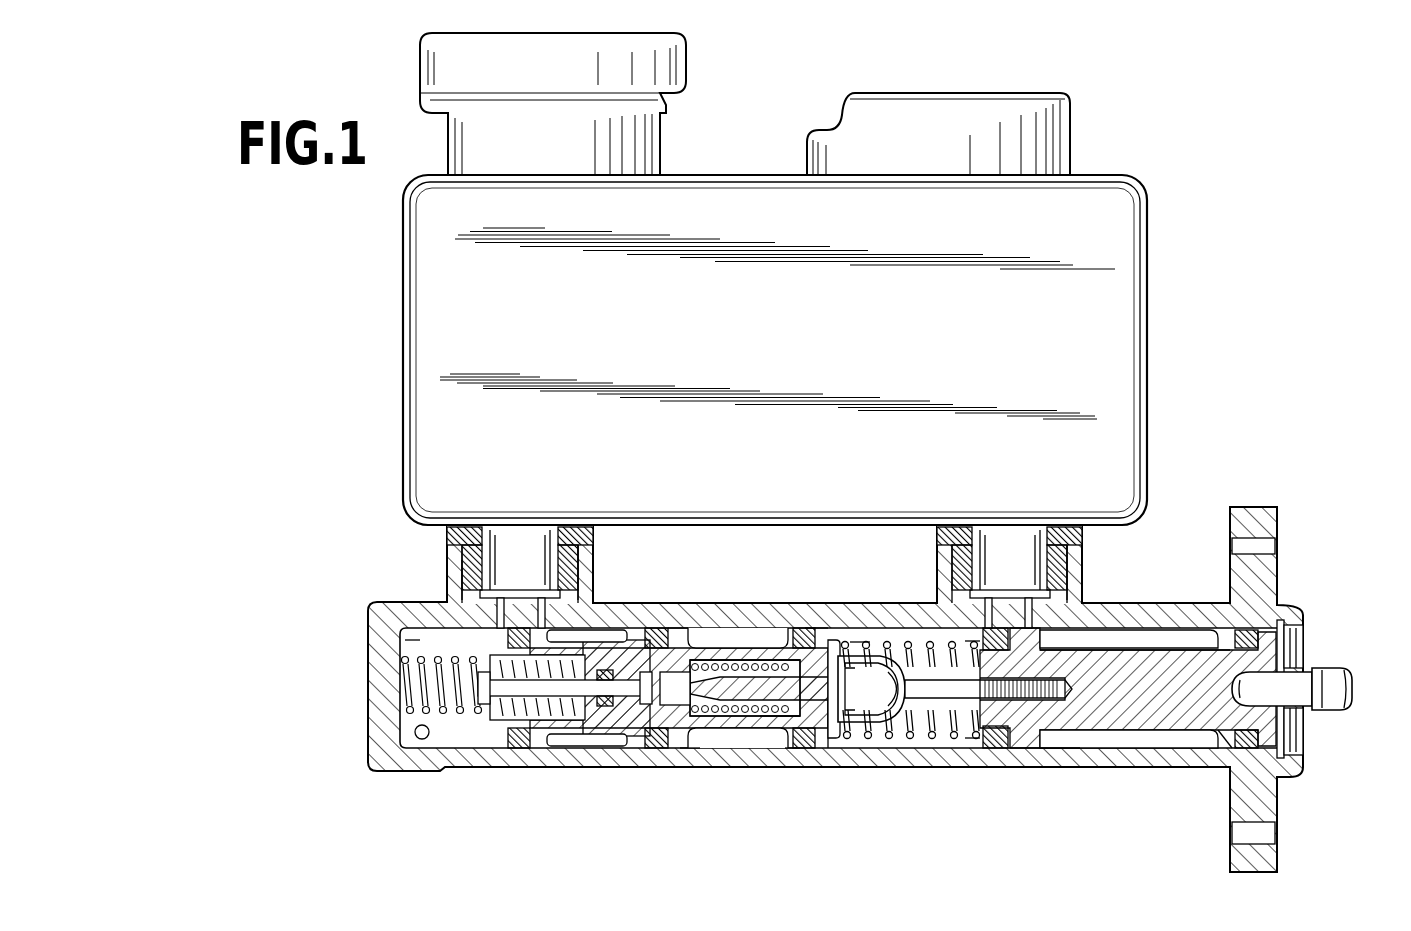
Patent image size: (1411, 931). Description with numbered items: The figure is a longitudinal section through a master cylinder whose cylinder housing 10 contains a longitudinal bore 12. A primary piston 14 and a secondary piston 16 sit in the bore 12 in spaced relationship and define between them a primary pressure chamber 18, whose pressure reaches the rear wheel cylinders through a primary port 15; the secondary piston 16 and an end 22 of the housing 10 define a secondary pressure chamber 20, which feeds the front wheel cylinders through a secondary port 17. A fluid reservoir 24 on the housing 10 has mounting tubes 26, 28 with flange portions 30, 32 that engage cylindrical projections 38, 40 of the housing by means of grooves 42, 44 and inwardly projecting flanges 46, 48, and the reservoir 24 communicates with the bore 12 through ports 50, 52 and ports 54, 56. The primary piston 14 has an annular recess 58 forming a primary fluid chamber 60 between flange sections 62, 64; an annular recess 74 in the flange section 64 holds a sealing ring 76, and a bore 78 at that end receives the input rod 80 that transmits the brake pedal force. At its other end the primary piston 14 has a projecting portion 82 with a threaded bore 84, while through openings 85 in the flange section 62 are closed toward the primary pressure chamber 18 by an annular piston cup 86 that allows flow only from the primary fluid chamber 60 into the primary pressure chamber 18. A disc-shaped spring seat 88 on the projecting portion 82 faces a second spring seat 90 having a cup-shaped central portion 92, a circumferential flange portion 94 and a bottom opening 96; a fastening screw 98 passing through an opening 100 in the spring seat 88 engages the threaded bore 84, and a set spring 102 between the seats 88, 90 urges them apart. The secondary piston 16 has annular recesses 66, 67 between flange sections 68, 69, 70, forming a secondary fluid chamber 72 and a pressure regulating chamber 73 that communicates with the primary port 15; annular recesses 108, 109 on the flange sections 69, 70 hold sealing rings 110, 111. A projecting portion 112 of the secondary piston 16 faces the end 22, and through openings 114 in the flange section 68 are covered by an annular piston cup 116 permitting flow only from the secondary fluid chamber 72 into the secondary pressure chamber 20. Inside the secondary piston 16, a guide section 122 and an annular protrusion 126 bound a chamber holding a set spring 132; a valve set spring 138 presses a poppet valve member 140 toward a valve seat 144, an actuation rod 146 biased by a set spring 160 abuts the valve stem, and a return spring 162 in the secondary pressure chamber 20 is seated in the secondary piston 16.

The cylinder housing 10 is at (880, 645).
The longitudinal bore 12 is at (900, 742).
The primary piston 14 is at (1165, 650).
The primary port 15 is at (750, 745).
The secondary piston 16 is at (680, 650).
The secondary port 17 is at (420, 738).
The primary pressure chamber 18 is at (860, 645).
The secondary pressure chamber 20 is at (410, 640).
The end of the housing 22 is at (385, 700).
The fluid reservoir 24 is at (707, 336).
The mounting tube 26 is at (1060, 545).
The mounting tube 28 is at (565, 530).
The flange portion 30 is at (950, 560).
The flange portion 32 is at (452, 565).
The cylindrical projection 38 is at (1085, 575).
The cylindrical projection 40 is at (588, 572).
The groove 42 is at (1075, 580).
The groove 44 is at (460, 582).
The inwardly projecting flange 46 is at (1068, 555).
The inwardly projecting flange 48 is at (578, 545).
The port 50 is at (1028, 612).
The port 52 is at (541, 600).
The port 54 is at (988, 612).
The port 56 is at (500, 600).
The annular recess 58 is at (1242, 638).
The primary fluid chamber 60 is at (1160, 746).
The flange section 62 is at (1080, 748).
The flange section 64 is at (1225, 746).
The annular recess 66 is at (600, 627).
The annular recess 67 is at (765, 680).
The flange section 68 is at (520, 752).
The flange section 69 is at (690, 748).
The flange section 70 is at (818, 748).
The secondary fluid chamber 72 is at (575, 745).
The pressure regulating chamber 73 is at (790, 748).
The annular recess 74 is at (1286, 650).
The sealing ring 76 is at (1300, 620).
The longitudinally extending bore 78 is at (1297, 735).
The input rod 80 is at (1336, 692).
The projecting portion 82 is at (1003, 748).
The threaded bore 84 is at (1060, 730).
The through openings 85 is at (1045, 632).
The annular piston cup 86 is at (1008, 612).
The spring seat 88 is at (841, 703).
The spring seat 90 is at (920, 745).
The cup-shaped central portion 92 is at (975, 684).
The circumferential flange portion 94 is at (835, 748).
The opening 96 is at (895, 645).
The fastening screw 98 is at (1050, 641).
The opening 100 is at (995, 750).
The set spring 102 is at (843, 645).
The annular recess 108 is at (670, 628).
The annular recess 109 is at (800, 630).
The sealing ring 110 is at (655, 630).
The sealing ring 111 is at (810, 628).
The projecting portion 112 is at (480, 640).
The through openings 114 is at (530, 596).
The annular piston cup 116 is at (505, 750).
The guide section 122 is at (838, 676).
The annular protrusion 126 is at (703, 668).
The set spring 132 is at (768, 718).
The valve set spring 138 is at (730, 665).
The poppet valve member 140 is at (702, 740).
The valve seat 144 is at (650, 750).
The actuation rod 146 is at (618, 698).
The set spring 160 is at (560, 718).
The return spring 162 is at (405, 715).